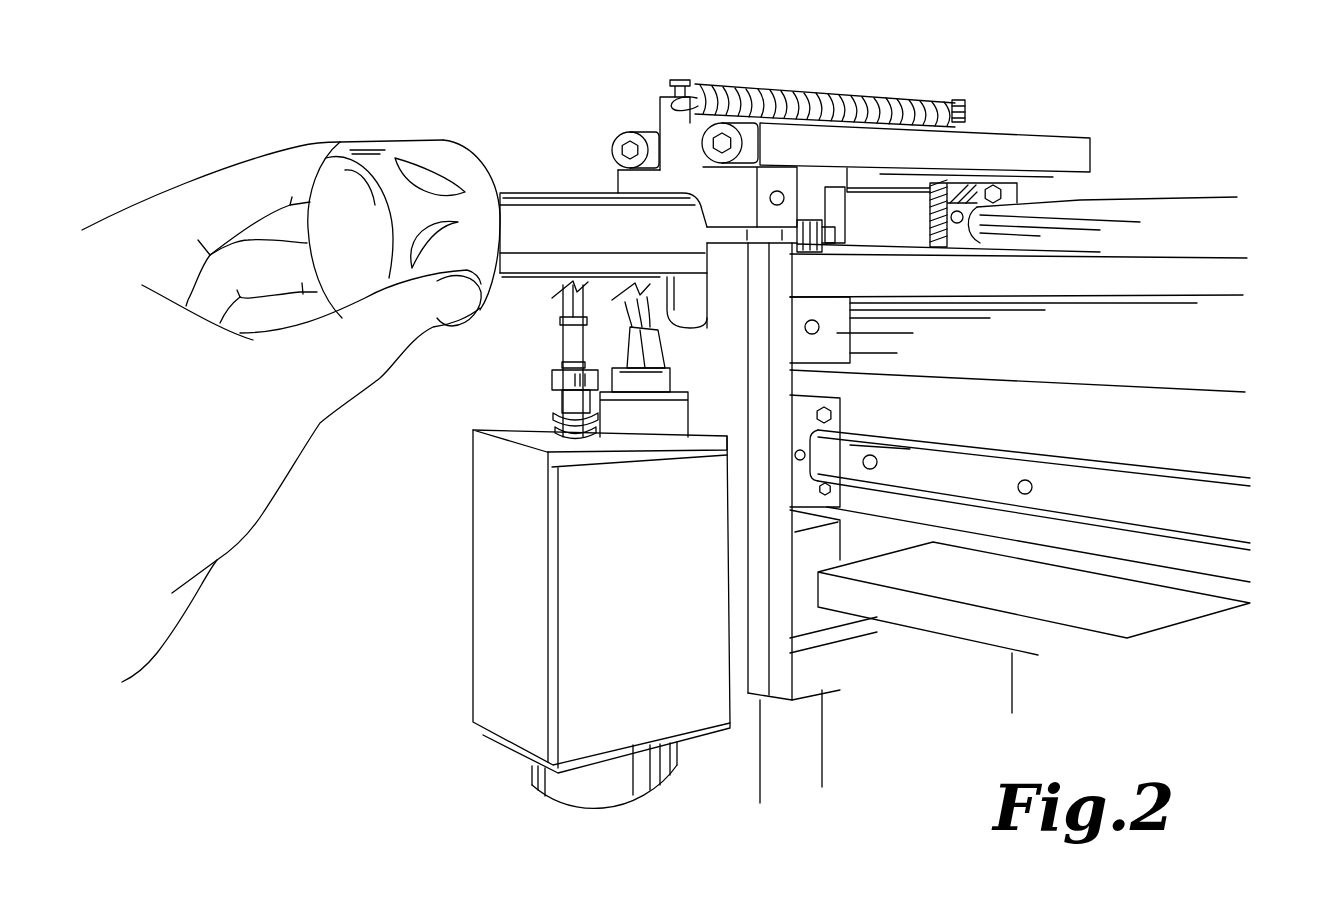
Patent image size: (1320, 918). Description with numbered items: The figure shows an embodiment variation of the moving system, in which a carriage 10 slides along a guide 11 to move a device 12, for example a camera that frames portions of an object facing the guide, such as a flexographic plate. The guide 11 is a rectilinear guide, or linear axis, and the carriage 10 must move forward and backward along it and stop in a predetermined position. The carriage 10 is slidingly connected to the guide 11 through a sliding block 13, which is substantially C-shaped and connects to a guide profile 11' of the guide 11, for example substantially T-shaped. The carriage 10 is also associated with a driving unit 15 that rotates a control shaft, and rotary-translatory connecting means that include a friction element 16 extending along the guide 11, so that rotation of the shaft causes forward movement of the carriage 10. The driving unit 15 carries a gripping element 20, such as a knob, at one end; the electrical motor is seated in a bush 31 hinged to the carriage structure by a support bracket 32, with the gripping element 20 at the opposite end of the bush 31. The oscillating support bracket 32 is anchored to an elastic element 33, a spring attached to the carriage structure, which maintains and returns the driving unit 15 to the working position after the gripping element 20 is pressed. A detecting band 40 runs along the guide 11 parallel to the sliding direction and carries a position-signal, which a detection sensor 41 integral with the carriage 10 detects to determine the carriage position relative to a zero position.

The carriage 10 is at (750, 647).
The guide 11 is at (1020, 541).
The guide profile 11' is at (1056, 350).
The device 12 is at (500, 640).
The sliding block 13 is at (1015, 193).
The driving unit 15 is at (527, 178).
The friction element 16 is at (1197, 257).
The gripping element 20 is at (373, 150).
The bush 31 is at (565, 193).
The support bracket 32 is at (677, 147).
The elastic element 33 is at (840, 90).
The detecting band 40 is at (1095, 364).
The detection sensor 41 is at (837, 335).